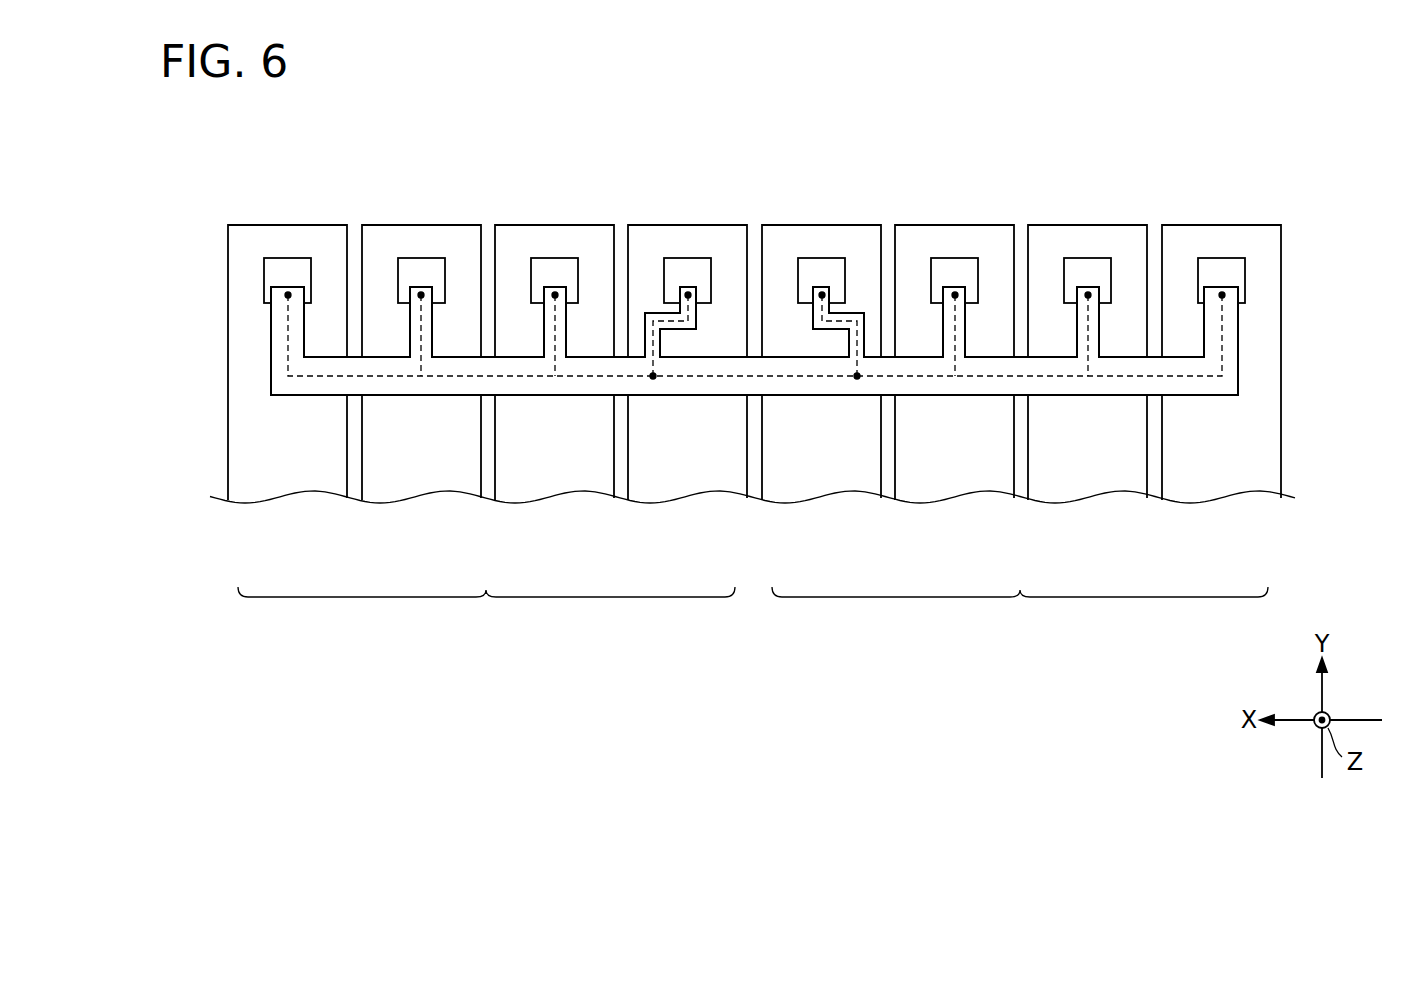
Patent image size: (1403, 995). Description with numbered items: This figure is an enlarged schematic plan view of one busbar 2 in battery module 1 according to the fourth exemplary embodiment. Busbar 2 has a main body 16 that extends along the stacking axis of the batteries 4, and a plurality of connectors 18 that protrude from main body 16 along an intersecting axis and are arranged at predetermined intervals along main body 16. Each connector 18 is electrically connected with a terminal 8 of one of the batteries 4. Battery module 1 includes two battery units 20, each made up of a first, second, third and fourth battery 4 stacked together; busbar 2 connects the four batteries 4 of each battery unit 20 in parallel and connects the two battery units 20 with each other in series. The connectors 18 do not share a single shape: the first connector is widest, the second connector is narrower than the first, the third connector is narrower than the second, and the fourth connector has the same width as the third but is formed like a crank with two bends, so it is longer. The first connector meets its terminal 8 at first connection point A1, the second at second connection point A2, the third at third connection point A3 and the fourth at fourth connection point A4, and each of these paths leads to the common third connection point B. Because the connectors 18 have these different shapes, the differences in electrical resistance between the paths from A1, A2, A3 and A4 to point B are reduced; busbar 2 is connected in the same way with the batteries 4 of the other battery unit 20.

The battery module 1 is at (715, 723).
The busbar 2 is at (1254, 407).
The battery 4 is at (1222, 557).
The terminal 8 is at (1224, 257).
The main body 16 is at (1215, 383).
The connector 18 is at (277, 343).
The battery unit 20 is at (753, 613).
The first connection point A1 is at (288, 295).
The second connection point A2 is at (422, 295).
The third connection point A3 is at (556, 295).
The fourth connection point A4 is at (689, 295).
The third connection point B is at (854, 415).